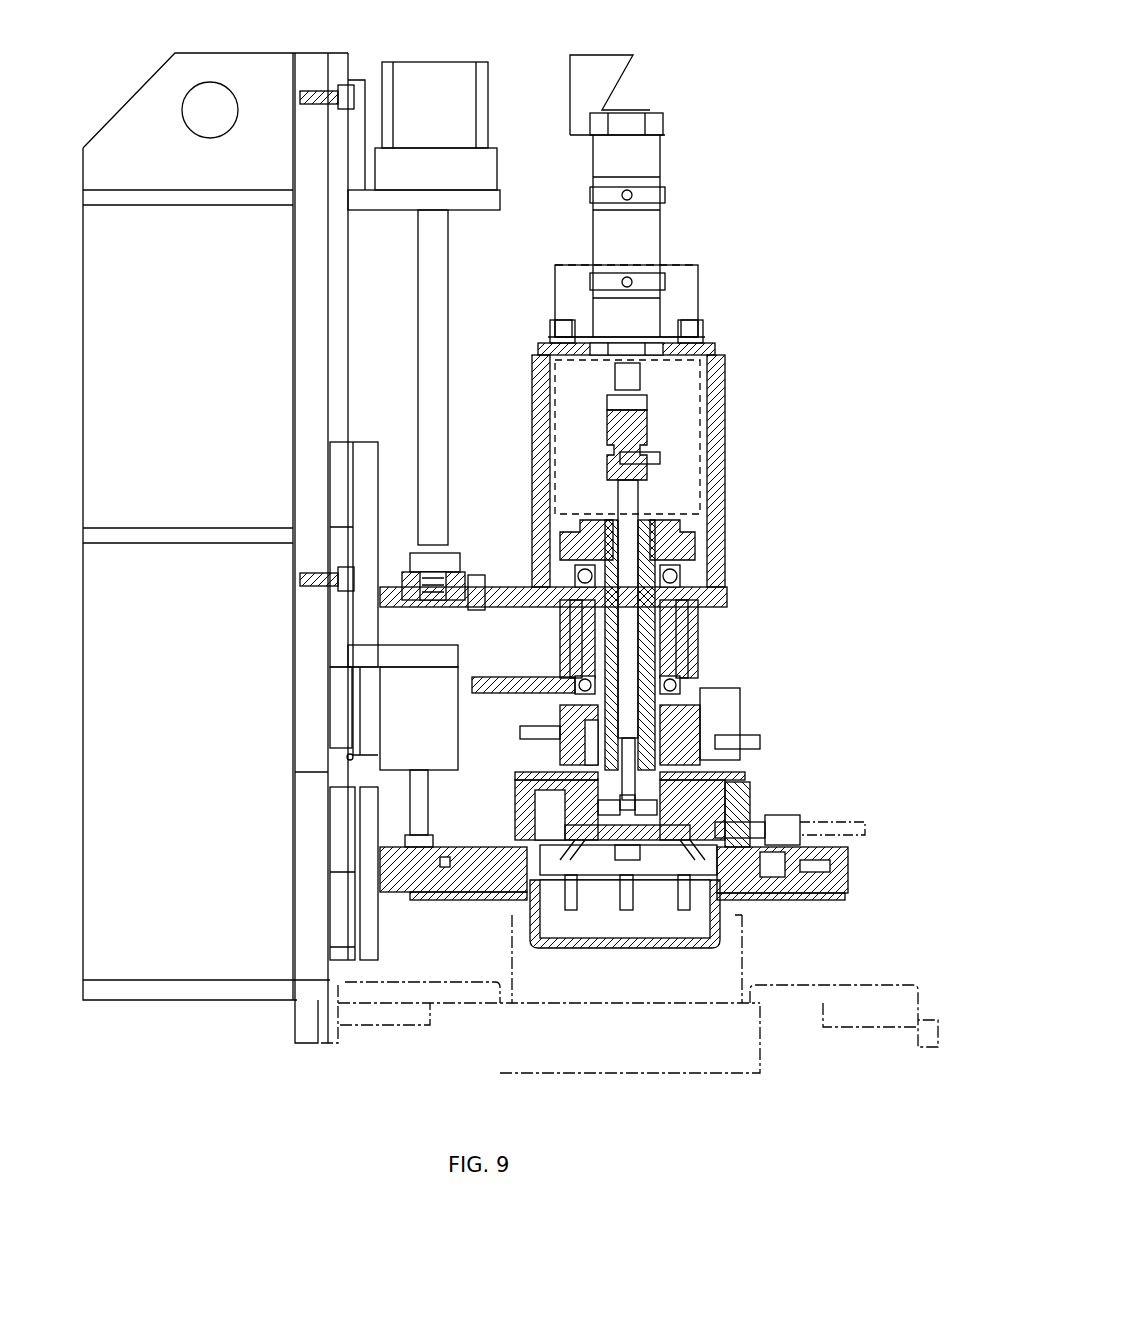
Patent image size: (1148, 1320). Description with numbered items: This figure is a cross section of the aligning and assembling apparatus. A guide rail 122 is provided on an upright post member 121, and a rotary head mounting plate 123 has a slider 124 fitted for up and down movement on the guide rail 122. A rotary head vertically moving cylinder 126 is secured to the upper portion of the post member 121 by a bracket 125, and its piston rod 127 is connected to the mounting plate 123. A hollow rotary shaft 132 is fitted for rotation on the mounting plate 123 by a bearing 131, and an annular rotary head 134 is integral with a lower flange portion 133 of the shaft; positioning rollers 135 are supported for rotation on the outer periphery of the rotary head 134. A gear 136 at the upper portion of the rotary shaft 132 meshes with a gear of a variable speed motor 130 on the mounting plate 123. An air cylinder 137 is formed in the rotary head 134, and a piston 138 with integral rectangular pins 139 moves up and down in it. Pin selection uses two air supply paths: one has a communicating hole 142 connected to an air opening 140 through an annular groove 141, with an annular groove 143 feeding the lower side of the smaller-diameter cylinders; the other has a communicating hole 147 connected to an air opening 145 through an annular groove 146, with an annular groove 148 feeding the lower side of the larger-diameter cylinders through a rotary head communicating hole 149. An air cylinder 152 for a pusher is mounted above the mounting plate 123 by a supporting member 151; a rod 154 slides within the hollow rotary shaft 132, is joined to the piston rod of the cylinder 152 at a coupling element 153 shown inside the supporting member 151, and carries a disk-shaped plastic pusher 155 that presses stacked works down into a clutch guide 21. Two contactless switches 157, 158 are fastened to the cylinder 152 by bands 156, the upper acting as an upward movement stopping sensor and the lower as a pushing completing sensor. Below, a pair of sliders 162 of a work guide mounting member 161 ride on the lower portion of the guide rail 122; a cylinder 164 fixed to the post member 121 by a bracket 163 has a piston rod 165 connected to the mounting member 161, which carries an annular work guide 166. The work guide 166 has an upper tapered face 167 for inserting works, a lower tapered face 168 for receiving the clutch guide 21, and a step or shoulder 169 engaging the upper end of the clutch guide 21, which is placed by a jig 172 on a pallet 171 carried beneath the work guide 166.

The clutch guide 21 is at (600, 950).
The post member 121 is at (310, 55).
The guide rail 122 is at (348, 357).
The rotary head mounting plate 123 is at (727, 597).
The slider 124 is at (345, 442).
The bracket 125 is at (360, 213).
The rotary head vertically moving cylinder 126 is at (442, 75).
The piston rod 127 is at (448, 270).
The variable speed motor 130 is at (700, 290).
The bearing 131 is at (680, 590).
The hollow rotary shaft 132 is at (690, 620).
The lower flange portion 133 is at (730, 790).
The rotary head 134 is at (820, 790).
The positioning rollers 135 is at (800, 815).
The gear 136 is at (690, 545).
The air cylinder 137 is at (515, 776).
The piston 138 is at (535, 810).
The pins 139 is at (560, 855).
The air opening 140 is at (706, 725).
The annular groove 141 is at (560, 718).
The communicating hole 142 is at (580, 760).
The annular groove 143 is at (530, 778).
The air opening 145 is at (555, 690).
The annular groove 146 is at (580, 672).
The communicating hole 147 is at (745, 740).
The annular groove 148 is at (630, 802).
The rotary head communicating hole 149 is at (575, 865).
The supporting member 151 is at (725, 420).
The air cylinder for pusher 152 is at (600, 222).
The coupling 153 is at (640, 380).
The rod 154 is at (638, 497).
The pusher 155 is at (628, 860).
The band 156 is at (650, 195).
The contactless switch 157 is at (622, 195).
The contactless switch 158 is at (630, 282).
The work guide mounting member 161 is at (455, 895).
The sliders 162 is at (345, 890).
The bracket 163 is at (378, 655).
The cylinder 164 is at (432, 690).
The piston rod 165 is at (410, 800).
The work guide 166 is at (700, 920).
The tapered face 167 is at (680, 880).
The tapered face 168 is at (745, 895).
The step or shoulder 169 is at (760, 895).
The pallet 171 is at (762, 1035).
The jig 172 is at (742, 960).